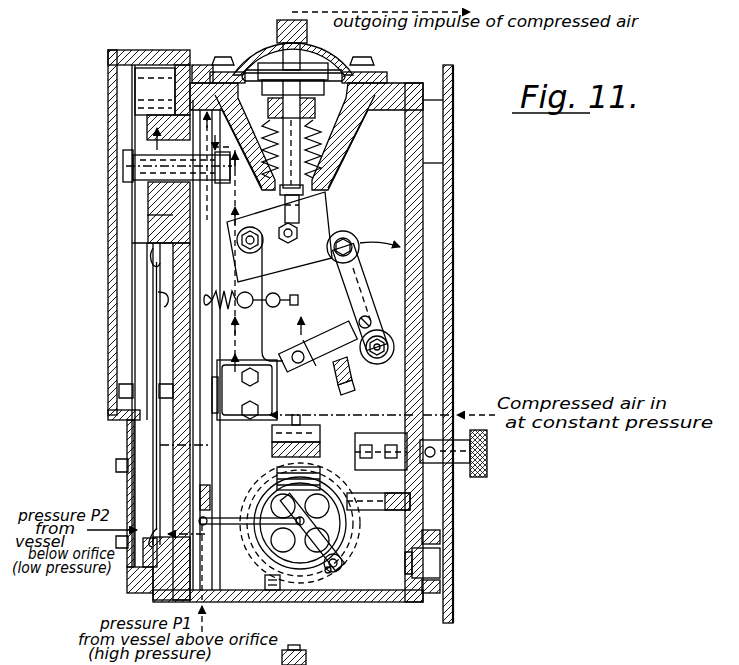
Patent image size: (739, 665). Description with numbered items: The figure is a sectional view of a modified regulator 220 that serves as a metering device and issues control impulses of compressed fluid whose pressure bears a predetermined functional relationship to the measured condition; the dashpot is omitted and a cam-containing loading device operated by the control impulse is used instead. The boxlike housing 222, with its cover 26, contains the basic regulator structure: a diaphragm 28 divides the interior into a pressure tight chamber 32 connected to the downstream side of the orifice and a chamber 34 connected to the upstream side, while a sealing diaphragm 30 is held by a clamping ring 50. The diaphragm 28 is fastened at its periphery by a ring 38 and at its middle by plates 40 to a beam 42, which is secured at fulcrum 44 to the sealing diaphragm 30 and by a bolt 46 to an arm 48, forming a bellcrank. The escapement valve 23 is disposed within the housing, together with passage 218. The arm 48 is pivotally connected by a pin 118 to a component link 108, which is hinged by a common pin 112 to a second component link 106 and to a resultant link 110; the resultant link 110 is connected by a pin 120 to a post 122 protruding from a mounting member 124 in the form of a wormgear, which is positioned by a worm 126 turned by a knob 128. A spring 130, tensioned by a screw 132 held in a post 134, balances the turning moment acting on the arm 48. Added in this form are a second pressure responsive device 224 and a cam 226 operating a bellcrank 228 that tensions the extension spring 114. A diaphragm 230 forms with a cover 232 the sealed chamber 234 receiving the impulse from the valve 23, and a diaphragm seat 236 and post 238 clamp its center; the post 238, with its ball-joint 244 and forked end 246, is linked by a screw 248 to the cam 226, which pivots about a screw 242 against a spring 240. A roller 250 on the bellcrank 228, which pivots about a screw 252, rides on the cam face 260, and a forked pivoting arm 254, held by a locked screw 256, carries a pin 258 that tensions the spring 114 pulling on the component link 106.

The valve 23 is at (248, 403).
The cover 26 is at (110, 325).
The diaphragm 28 is at (153, 255).
The sealing diaphragm 30 is at (158, 183).
The pressure tight chamber 32 is at (136, 212).
The chamber 34 is at (160, 297).
The ring 38 is at (145, 478).
The plates 40 is at (155, 277).
The beam 42 is at (135, 360).
The fulcrum 44 is at (157, 167).
The bolt 46 is at (125, 160).
The arm 48 is at (210, 528).
The clamping ring 50 is at (153, 213).
The component link 106 is at (292, 504).
The component link 108 is at (222, 510).
The resultant link 110 is at (346, 532).
The pin 112 is at (263, 578).
The spring 114 is at (322, 413).
The pin 118 is at (206, 530).
The pin 120 is at (344, 565).
The post 122 is at (331, 572).
The mounting member 124 is at (350, 478).
The positioning member 126 is at (318, 440).
The knob 128 is at (488, 460).
The spring 130 is at (258, 296).
The screw 132 is at (274, 308).
The post 134 is at (298, 328).
The inlet passage 218 is at (135, 90).
The regulator 220 is at (515, 236).
The housing 222 is at (420, 299).
The second pressure responsive device 224 is at (320, 128).
The cam 226 is at (303, 212).
The bellcrank 228 is at (372, 306).
The diaphragm 230 is at (345, 60).
The cover 232 is at (268, 40).
The sealed chamber 234 is at (291, 63).
The diaphragm seat 236 is at (333, 107).
The post 238 is at (288, 30).
The spring 240 is at (327, 150).
The screw 242 is at (270, 258).
The ball-joint 244 is at (254, 261).
The forked end 246 is at (293, 232).
The screw 248 is at (290, 248).
The roller 250 is at (369, 237).
The screw 252 is at (420, 345).
The forked pivoting arm 254 is at (332, 336).
The locked screw 256 is at (352, 382).
The pin 258 is at (293, 354).
The face 260 is at (357, 167).